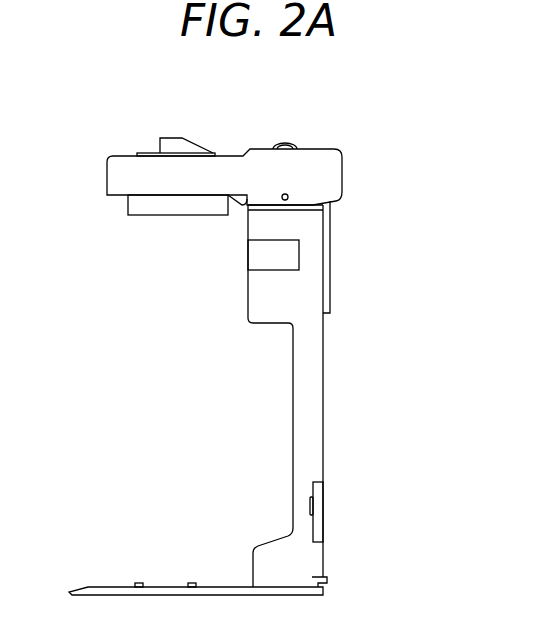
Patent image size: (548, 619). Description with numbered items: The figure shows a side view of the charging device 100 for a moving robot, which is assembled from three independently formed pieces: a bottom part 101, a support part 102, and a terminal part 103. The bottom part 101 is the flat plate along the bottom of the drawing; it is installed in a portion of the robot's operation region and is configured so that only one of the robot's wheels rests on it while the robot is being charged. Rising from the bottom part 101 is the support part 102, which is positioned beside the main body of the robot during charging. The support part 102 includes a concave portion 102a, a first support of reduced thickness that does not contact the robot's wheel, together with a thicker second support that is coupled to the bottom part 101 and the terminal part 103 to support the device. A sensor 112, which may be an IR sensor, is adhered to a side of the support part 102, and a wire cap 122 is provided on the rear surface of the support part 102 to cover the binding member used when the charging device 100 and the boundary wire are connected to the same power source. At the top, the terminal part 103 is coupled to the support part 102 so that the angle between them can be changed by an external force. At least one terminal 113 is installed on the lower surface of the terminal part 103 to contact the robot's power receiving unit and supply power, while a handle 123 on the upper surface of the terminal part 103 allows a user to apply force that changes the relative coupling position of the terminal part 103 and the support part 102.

The charging device 100 is at (63, 118).
The bottom part 101 is at (224, 589).
The support part 102 is at (308, 373).
The concave portion 102a is at (273, 330).
The terminal part 103 is at (333, 171).
The sensor 112 is at (287, 252).
The terminal 113 is at (153, 208).
The wire cap 122 is at (315, 503).
The handle 123 is at (172, 137).